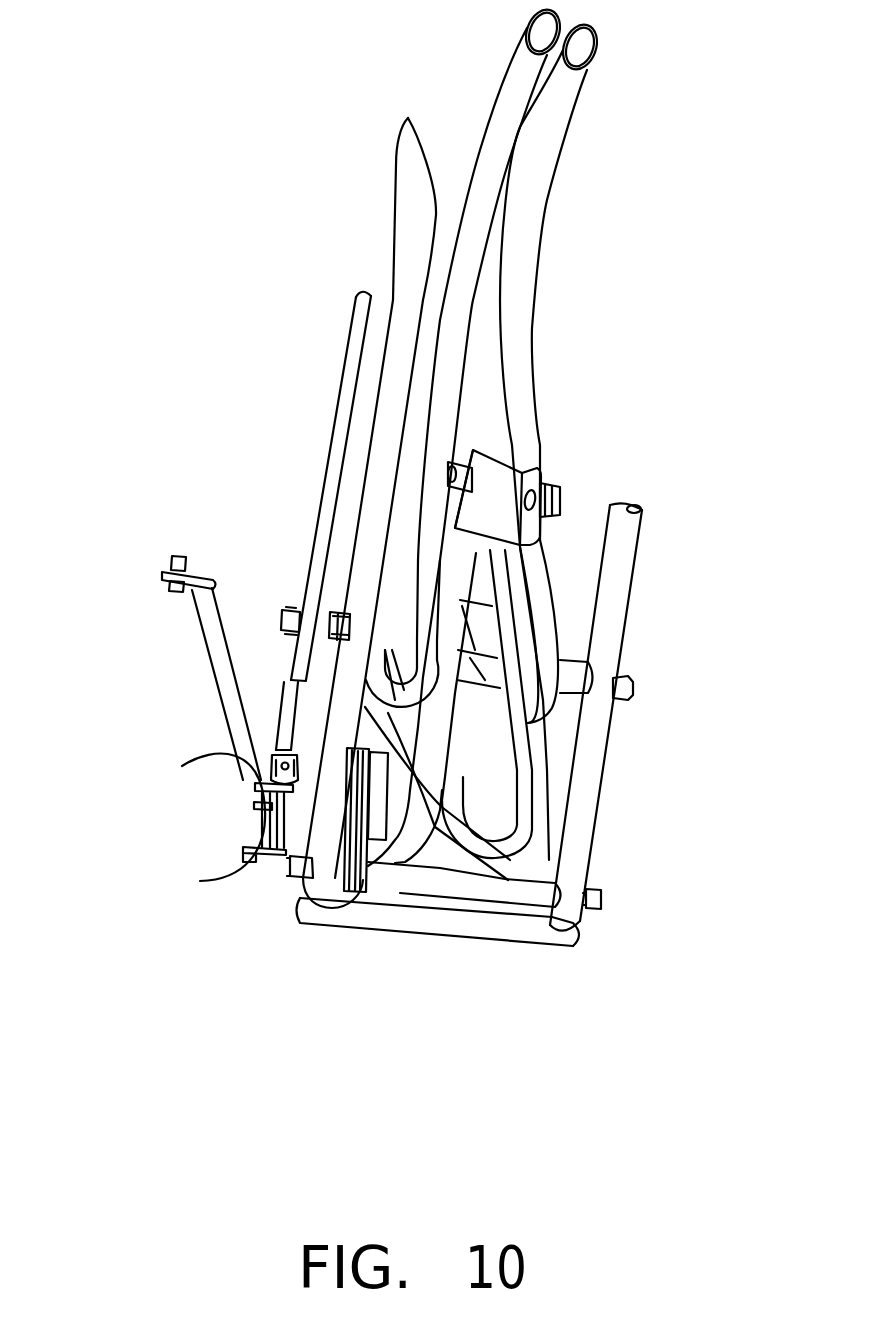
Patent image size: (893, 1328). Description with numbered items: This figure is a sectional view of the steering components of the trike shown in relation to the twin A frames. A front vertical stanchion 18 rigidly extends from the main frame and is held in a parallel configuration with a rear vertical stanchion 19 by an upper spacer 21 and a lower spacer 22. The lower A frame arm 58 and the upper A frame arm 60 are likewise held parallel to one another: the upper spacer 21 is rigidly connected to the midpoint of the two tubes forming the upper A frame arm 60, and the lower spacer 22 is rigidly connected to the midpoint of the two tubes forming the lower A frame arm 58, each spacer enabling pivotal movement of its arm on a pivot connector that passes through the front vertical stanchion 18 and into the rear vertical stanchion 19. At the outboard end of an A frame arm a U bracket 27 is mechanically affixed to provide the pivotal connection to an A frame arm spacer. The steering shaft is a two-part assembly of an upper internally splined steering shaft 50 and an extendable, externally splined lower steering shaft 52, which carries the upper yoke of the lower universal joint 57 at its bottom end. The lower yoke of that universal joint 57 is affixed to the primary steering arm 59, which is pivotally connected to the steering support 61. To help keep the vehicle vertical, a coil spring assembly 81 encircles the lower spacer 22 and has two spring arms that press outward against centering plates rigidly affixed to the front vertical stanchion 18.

The front vertical stanchion 18 is at (408, 192).
The rear vertical stanchion 19 is at (588, 790).
The upper spacer 21 is at (397, 562).
The lower spacer 22 is at (531, 895).
The U bracket 27 is at (548, 465).
The upper internally splined steering shaft 50 is at (352, 380).
The lower steering shaft 52 is at (298, 737).
The lower universal joint 57 is at (272, 758).
The lower A frame arm 58 is at (408, 845).
The primary steering arm 59 is at (217, 648).
The upper A frame arm 60 is at (523, 207).
The steering support 61 is at (262, 866).
The coil spring assembly 81 is at (362, 828).